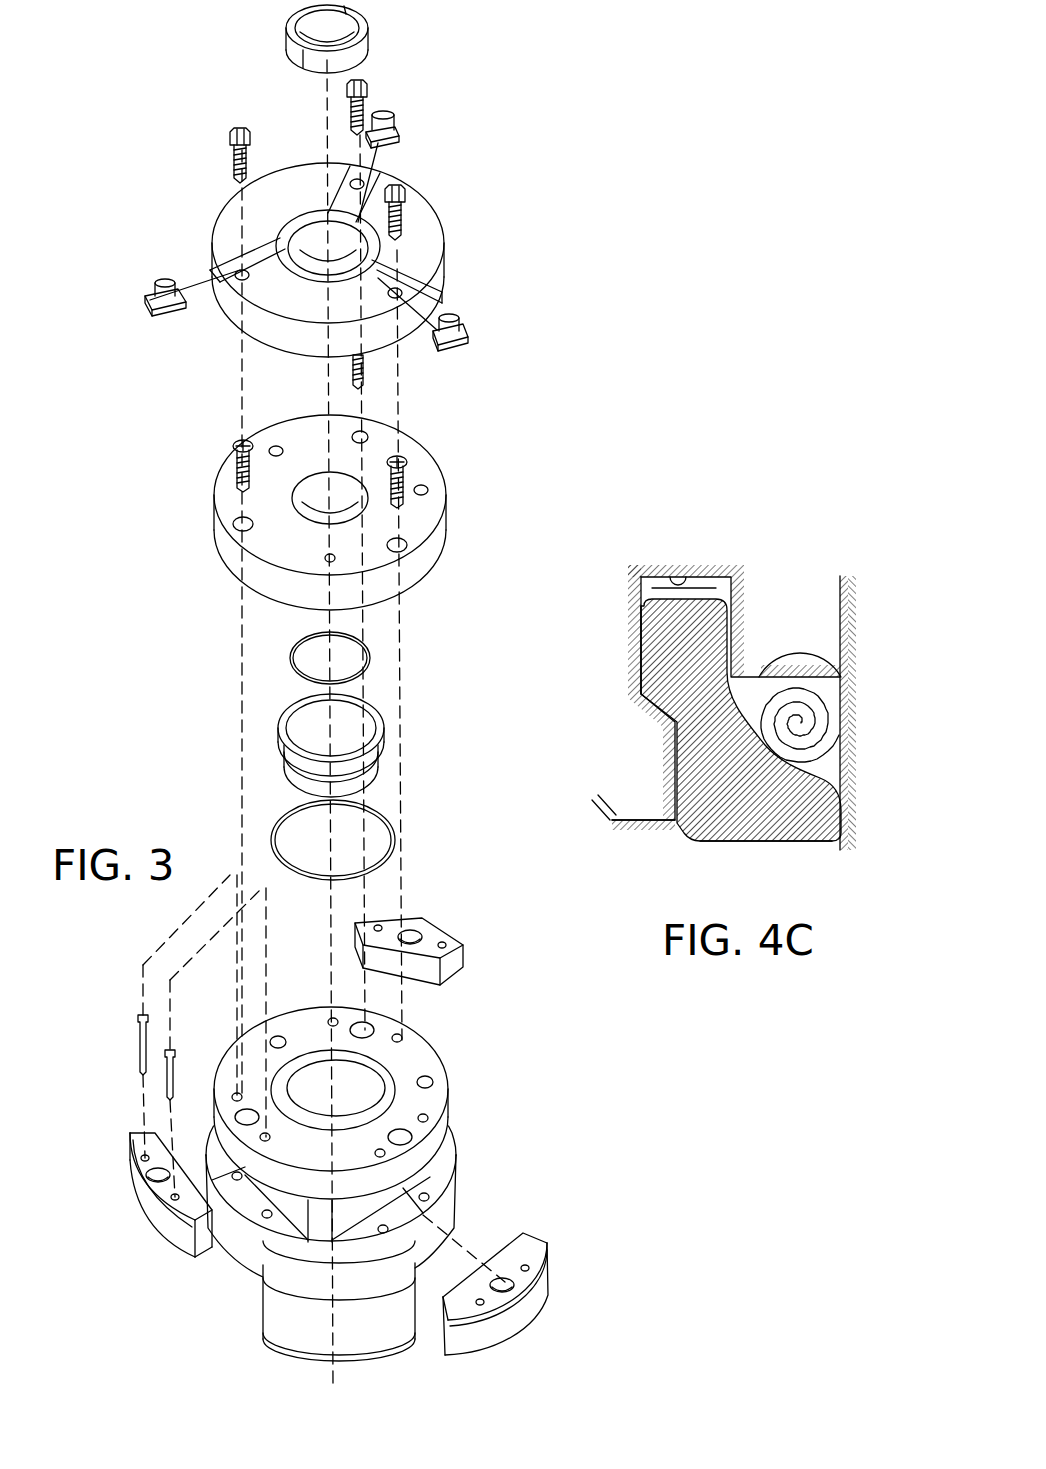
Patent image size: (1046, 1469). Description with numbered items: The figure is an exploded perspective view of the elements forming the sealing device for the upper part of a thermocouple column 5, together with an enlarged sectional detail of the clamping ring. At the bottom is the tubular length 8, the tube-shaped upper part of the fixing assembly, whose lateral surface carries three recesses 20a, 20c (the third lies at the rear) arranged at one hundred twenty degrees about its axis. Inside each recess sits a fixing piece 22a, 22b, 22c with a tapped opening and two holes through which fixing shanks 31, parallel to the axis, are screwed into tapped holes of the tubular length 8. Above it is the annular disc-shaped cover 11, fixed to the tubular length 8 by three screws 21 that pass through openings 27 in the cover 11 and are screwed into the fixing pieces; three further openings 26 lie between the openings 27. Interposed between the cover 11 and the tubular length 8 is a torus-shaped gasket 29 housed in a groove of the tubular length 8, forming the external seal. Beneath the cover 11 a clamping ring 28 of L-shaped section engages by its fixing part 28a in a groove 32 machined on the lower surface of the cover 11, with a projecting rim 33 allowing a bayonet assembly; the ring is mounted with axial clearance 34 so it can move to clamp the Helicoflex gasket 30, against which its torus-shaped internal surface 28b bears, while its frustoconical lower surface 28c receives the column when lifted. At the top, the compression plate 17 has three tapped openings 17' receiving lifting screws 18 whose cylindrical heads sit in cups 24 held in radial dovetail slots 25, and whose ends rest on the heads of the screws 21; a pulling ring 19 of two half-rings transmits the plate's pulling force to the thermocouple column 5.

In FIG. 4C, the thermocouple column 5 is at (885, 741).
In FIG. 3, the tubular length 8 is at (297, 1327).
In FIG. 3, the cover 11 is at (235, 572).
In FIG. 4C, the cover 11 is at (802, 624).
In FIG. 3, the compression plate 17 is at (293, 260).
In FIG. 3, the tapped openings 17' is at (340, 293).
In FIG. 3, the compression screws 18 is at (372, 92).
In FIG. 3, the pulling ring 19 is at (290, 38).
In FIG. 3, the recess 20a is at (440, 1180).
In FIG. 3, the recess 20c is at (290, 1238).
In FIG. 3, the screws 21 is at (366, 372).
In FIG. 3, the fixing piece 22a is at (532, 1310).
In FIG. 3, the fixing piece 22b is at (455, 970).
In FIG. 3, the fixing piece 22c is at (178, 1238).
In FIG. 3, the cup 24 is at (468, 330).
In FIG. 3, the radial dovetail slot 25 is at (393, 262).
In FIG. 3, the openings 26 is at (232, 522).
In FIG. 3, the openings 27 is at (406, 547).
In FIG. 3, the clamping ring 28 is at (284, 757).
In FIG. 4C, the clamping ring 28 is at (742, 822).
In FIG. 4C, the fixing part 28a is at (692, 668).
In FIG. 4C, the internal surface 28b is at (838, 668).
In FIG. 4C, the frustoconical lower surface 28c is at (813, 822).
In FIG. 3, the torus-shaped gasket 29 is at (276, 838).
In FIG. 3, the Helicoflex gasket 30 is at (290, 663).
In FIG. 4C, the Helicoflex gasket 30 is at (826, 754).
In FIG. 3, the fixing shanks 31 is at (140, 1060).
In FIG. 4C, the groove 32 is at (679, 563).
In FIG. 4C, the projecting rim 33 is at (652, 768).
In FIG. 4C, the axial clearance 34 is at (712, 586).